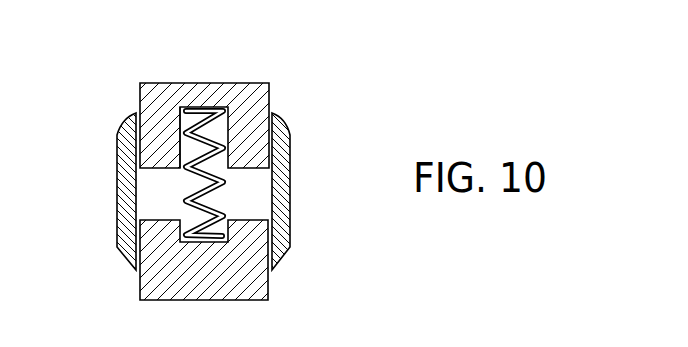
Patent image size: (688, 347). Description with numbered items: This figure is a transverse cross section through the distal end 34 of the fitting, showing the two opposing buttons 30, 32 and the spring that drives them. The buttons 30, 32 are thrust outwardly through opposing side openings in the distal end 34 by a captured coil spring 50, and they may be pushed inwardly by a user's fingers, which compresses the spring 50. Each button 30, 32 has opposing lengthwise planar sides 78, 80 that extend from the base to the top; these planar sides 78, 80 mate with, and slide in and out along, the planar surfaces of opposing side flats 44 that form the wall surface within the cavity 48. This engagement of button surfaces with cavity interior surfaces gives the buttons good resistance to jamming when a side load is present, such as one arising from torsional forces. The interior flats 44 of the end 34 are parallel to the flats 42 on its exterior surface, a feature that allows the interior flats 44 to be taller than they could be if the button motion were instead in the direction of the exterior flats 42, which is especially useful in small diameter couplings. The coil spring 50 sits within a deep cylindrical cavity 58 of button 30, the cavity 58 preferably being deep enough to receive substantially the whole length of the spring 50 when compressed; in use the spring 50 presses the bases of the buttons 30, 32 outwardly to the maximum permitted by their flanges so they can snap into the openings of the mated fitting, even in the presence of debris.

The button 30 is at (175, 83).
The button 32 is at (254, 290).
The distal end 34 is at (321, 80).
The exterior flats 42 is at (117, 242).
The side flats 44 is at (138, 200).
The cavity 48 is at (150, 184).
The coil spring 50 is at (215, 188).
The cylindrical cavity 58 is at (182, 130).
The planar side 78 is at (140, 106).
The planar side 80 is at (139, 291).